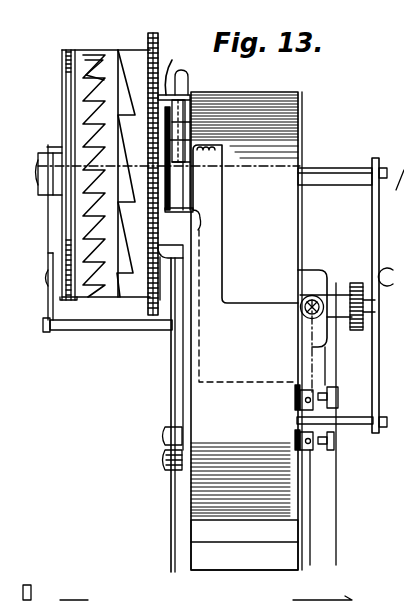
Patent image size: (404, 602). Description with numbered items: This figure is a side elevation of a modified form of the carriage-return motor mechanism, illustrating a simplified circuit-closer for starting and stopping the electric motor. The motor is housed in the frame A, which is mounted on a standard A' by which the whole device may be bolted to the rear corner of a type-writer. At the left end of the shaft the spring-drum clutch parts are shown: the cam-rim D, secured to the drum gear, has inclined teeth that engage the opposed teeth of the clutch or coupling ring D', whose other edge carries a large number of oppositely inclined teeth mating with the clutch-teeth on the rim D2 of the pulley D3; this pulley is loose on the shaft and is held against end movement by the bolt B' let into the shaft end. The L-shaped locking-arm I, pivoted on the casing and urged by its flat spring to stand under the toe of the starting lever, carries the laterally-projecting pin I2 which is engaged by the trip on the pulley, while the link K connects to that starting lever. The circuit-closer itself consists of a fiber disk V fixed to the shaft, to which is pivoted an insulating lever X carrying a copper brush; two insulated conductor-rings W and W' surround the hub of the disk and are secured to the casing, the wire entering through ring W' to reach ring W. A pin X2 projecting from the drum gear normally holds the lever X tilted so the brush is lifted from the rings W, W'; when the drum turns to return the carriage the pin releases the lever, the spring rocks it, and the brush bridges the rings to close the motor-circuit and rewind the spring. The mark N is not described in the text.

The pulley D3 is at (78, 33).
The rim D2 is at (83, 47).
The clutch or coupling ring D' is at (123, 158).
The cam-rim D is at (143, 168).
The bolt B' is at (46, 232).
The laterally-projecting pin I2 is at (110, 333).
The locking-arm I is at (171, 372).
The pin X2 is at (180, 68).
The lever X is at (189, 82).
The conductor-ring W is at (206, 156).
The conductor-ring W' is at (242, 263).
The disk V is at (163, 220).
The frame A is at (246, 331).
The standard A' is at (244, 561).
The link K is at (398, 516).
The shaft N is at (336, 594).